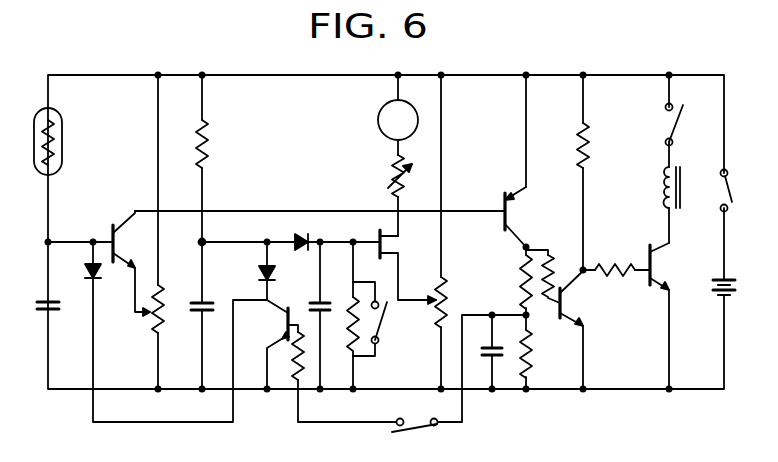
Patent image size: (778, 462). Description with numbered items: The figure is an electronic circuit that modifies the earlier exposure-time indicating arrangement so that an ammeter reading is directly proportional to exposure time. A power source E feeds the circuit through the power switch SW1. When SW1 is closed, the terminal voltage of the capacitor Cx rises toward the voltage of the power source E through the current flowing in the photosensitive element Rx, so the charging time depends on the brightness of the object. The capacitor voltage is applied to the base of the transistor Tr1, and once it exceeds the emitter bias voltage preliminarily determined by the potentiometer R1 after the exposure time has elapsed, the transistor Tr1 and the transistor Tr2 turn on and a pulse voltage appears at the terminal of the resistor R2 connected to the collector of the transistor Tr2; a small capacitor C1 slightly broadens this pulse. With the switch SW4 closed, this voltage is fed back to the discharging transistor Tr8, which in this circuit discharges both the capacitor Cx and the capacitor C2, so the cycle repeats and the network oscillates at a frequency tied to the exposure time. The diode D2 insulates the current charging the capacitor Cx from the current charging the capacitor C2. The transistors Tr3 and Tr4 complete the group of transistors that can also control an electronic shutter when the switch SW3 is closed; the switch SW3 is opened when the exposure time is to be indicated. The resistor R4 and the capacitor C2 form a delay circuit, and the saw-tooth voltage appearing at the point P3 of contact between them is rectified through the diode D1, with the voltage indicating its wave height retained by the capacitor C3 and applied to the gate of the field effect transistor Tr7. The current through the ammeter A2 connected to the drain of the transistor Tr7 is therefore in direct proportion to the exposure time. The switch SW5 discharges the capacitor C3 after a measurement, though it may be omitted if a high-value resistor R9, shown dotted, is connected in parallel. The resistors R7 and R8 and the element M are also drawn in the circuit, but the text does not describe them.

The photosensitive element Rx is at (63, 134).
The resistor R4 is at (209, 148).
The point of contact between resistor R4 and capacitor C2 P3 is at (205, 242).
The transistor Tr1 is at (125, 238).
The capacitor Cx is at (38, 302).
The diode D2 is at (99, 277).
The potentiometer R1 is at (164, 313).
The capacitor C2 is at (222, 297).
The ammeter A2 is at (376, 123).
The variable resistor R8 is at (390, 162).
The diode D1 is at (302, 236).
The field effect transistor Tr7 is at (386, 247).
The capacitor C3 is at (340, 297).
The resistor R9 is at (348, 333).
The switch SW5 is at (383, 312).
The transistor Tr8 is at (284, 307).
The variable resistor R7 is at (446, 304).
The switch SW4 is at (404, 434).
The transistor Tr2 is at (506, 214).
The transistor Tr3 is at (566, 306).
The capacitor C1 is at (510, 345).
The resistor R2 is at (532, 368).
The transistor Tr4 is at (651, 266).
The switch SW3 is at (678, 111).
The relay coil M is at (682, 191).
The power switch SW1 is at (740, 194).
The power source E is at (734, 262).